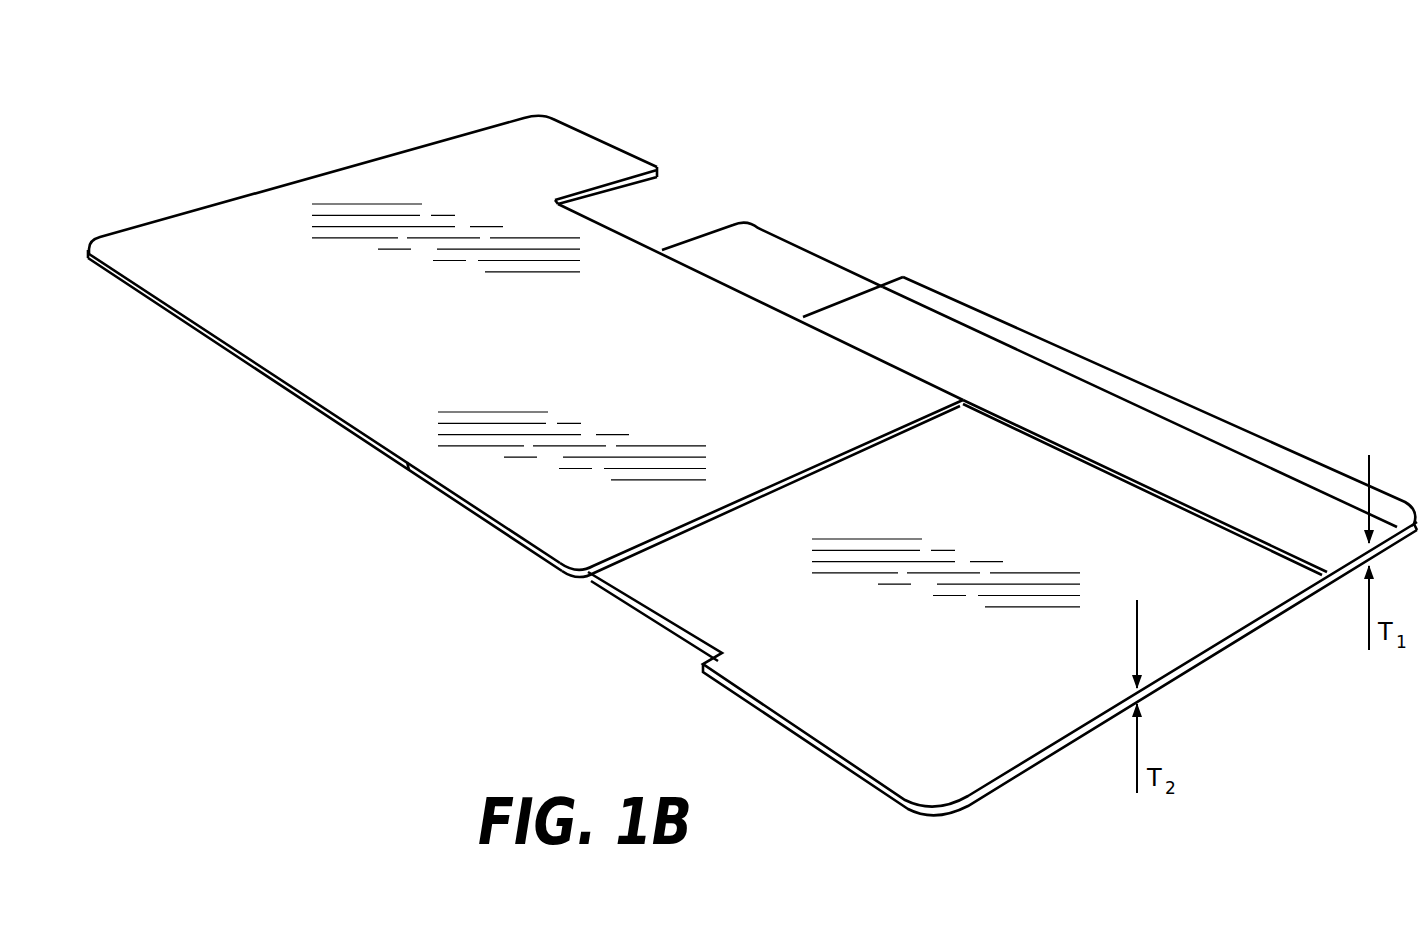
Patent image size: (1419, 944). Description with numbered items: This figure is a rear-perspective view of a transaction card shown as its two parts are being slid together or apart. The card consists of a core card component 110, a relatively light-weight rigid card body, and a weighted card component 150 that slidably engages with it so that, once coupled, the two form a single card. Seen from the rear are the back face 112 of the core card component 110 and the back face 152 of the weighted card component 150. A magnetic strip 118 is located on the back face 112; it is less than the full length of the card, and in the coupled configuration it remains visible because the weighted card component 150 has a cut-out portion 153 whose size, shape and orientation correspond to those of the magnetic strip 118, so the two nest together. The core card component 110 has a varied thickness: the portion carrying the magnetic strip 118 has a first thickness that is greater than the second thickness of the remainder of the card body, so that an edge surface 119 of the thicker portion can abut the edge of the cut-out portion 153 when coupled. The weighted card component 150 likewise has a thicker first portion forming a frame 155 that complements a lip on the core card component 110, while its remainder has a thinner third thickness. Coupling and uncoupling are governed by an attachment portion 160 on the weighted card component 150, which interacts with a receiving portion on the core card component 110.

The core card component 110 is at (265, 238).
The back face 112 is at (952, 711).
The magnetic strip 118 is at (1150, 455).
The edge surface 119 is at (1257, 542).
The weighted card component 150 is at (1000, 458).
The back face 152 is at (498, 339).
The cut-out portion 153 is at (662, 190).
The frame 155 is at (646, 232).
The attachment portion 160 is at (742, 286).